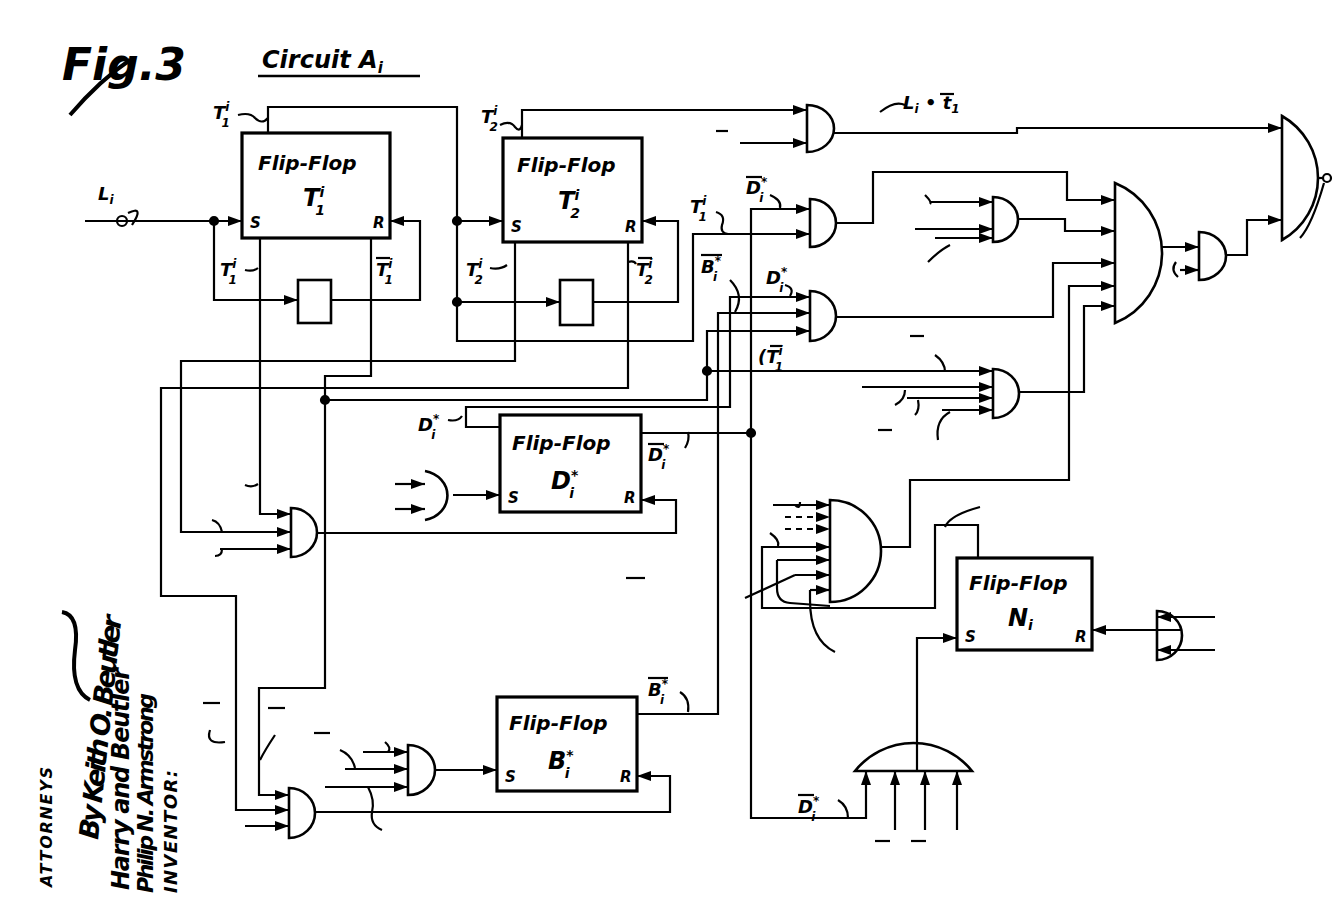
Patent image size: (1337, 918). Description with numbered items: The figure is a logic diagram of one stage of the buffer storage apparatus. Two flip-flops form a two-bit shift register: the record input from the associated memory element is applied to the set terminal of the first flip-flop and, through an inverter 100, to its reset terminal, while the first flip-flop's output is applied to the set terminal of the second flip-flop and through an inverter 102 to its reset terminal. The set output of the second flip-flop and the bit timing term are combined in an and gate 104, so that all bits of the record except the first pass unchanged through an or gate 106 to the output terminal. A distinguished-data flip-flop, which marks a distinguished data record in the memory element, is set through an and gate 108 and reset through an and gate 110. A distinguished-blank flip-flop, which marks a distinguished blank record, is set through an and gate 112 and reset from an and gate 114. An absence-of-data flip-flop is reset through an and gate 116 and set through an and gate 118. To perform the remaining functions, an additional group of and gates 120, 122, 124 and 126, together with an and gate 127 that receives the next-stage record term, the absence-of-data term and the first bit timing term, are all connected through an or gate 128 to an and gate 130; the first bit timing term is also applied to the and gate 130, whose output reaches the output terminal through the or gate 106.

The inverter 100 is at (305, 323).
The inverter 102 is at (582, 280).
The and gate 104 is at (830, 147).
The or gate 106 is at (1282, 181).
The and gate 108 is at (440, 487).
The and gate 110 is at (316, 553).
The and gate 112 is at (425, 745).
The and gate 114 is at (312, 835).
The and gate 116 is at (1165, 648).
The and gate 118 is at (925, 760).
The and gate 120 is at (828, 243).
The and gate 122 is at (830, 330).
The and gate 124 is at (870, 508).
The and gate 126 is at (1030, 420).
The and gate 127 is at (1013, 238).
The or gate 128 is at (1128, 297).
The and gate 130 is at (1222, 270).